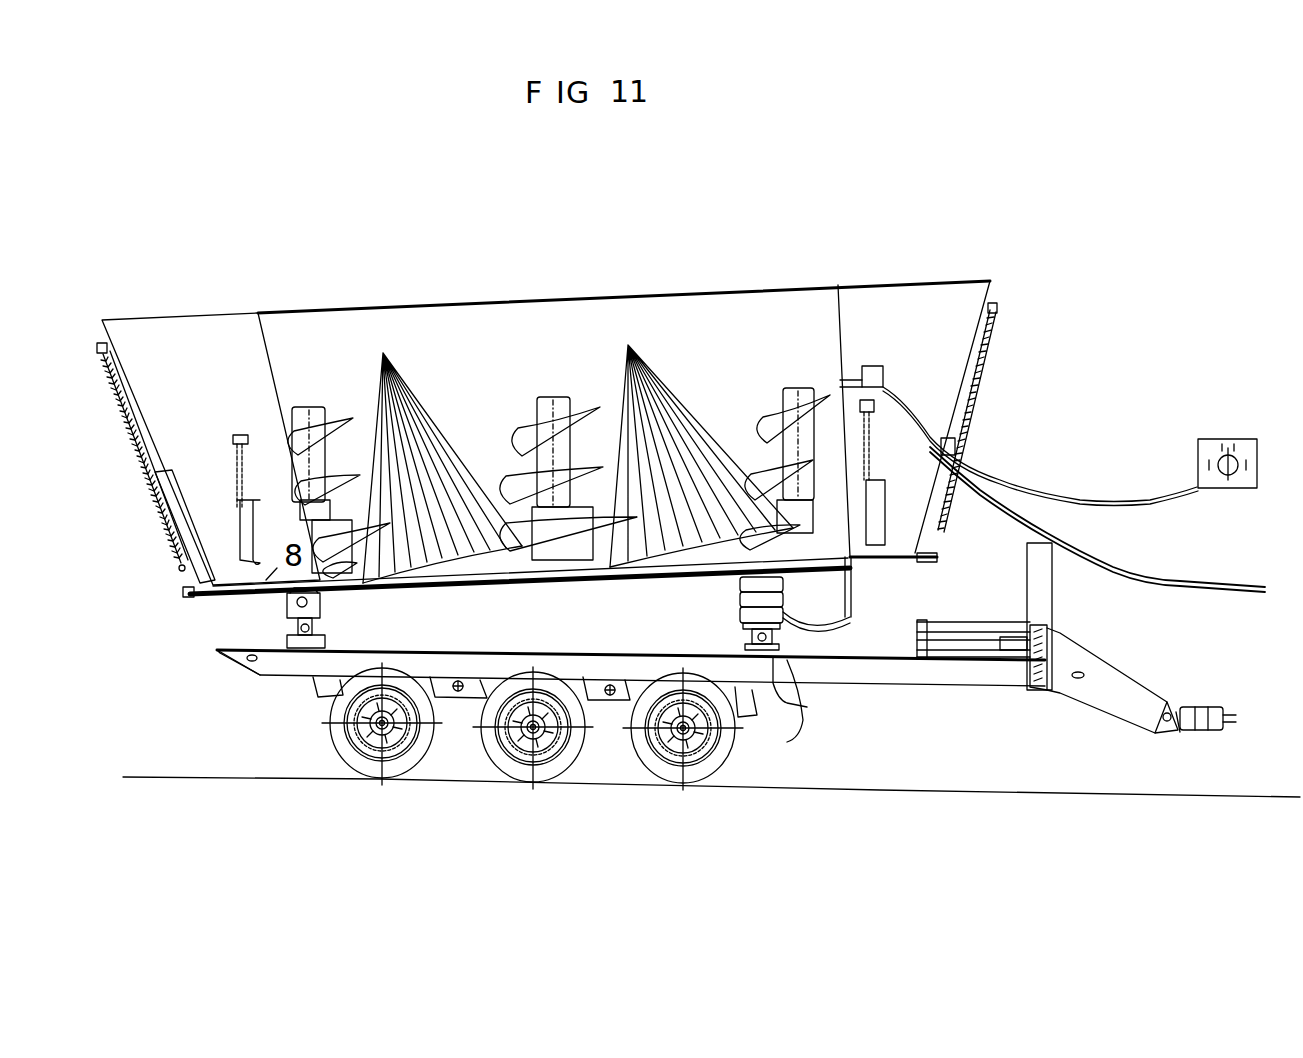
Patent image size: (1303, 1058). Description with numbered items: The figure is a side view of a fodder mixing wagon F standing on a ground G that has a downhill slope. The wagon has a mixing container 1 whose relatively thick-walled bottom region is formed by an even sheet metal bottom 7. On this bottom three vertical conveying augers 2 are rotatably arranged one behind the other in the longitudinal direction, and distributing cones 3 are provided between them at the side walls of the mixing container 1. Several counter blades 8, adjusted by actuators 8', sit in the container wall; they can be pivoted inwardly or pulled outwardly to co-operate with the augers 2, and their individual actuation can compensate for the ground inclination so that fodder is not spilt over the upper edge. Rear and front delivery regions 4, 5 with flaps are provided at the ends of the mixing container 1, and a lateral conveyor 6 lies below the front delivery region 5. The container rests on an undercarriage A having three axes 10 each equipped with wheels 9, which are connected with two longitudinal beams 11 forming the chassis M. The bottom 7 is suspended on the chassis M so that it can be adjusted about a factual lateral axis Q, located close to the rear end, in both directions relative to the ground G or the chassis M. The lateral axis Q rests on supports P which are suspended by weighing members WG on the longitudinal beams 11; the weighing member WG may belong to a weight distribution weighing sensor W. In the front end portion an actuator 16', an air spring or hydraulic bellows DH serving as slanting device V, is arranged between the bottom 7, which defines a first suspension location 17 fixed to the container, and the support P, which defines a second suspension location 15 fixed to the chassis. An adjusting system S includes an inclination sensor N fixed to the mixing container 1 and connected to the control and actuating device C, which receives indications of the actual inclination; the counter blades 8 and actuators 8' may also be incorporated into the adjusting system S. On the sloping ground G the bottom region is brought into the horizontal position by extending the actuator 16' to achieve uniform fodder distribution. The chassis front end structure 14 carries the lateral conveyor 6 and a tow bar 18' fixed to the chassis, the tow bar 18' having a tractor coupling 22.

The mixing container 1 is at (870, 313).
The vertical conveying auger 2 is at (307, 420).
The distributing cone 3 is at (403, 403).
The delivery region 4 is at (180, 517).
The delivery region 5 is at (950, 500).
The lateral conveyor 6 is at (953, 632).
The sheet metal bottom 7 is at (183, 593).
The counter blade 8 is at (577, 521).
The actuator 8' is at (573, 453).
The wheel 9 is at (393, 767).
The axis 10 is at (367, 760).
The longitudinal beam 11 is at (455, 663).
The chassis front end structure 14 is at (987, 670).
The second suspension location 15 is at (790, 633).
The actuator 16' is at (714, 608).
The first suspension location 17 is at (747, 570).
The tow bar 18' is at (1106, 679).
The tractor coupling 22 is at (1232, 710).
The fodder mixing wagon F is at (902, 267).
The inclination sensor N is at (890, 365).
The adjusting system S is at (993, 430).
The control and actuating device C is at (1210, 443).
The lateral axis Q is at (325, 603).
The support P is at (313, 628).
The weighing member WG is at (290, 625).
The weight distribution weighing sensor W is at (627, 603).
The slanting device V is at (793, 605).
The hydraulic bellows DH is at (738, 640).
The chassis M is at (225, 677).
The undercarriage A is at (318, 752).
The ground G is at (765, 792).